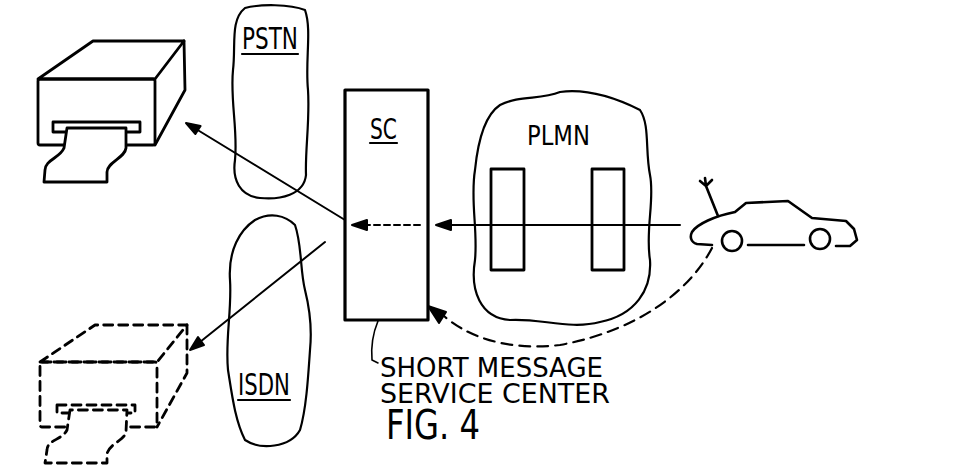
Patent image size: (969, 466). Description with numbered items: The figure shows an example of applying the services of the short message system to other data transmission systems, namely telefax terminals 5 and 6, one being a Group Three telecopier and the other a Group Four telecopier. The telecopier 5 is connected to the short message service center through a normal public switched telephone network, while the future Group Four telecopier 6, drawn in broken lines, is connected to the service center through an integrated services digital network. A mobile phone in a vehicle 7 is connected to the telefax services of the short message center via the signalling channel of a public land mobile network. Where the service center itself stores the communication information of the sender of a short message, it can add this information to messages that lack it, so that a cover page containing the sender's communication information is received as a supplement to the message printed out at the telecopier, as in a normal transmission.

The telefax terminal 5 is at (67, 68).
The telefax terminal 6 is at (66, 352).
The vehicle 7 is at (761, 200).